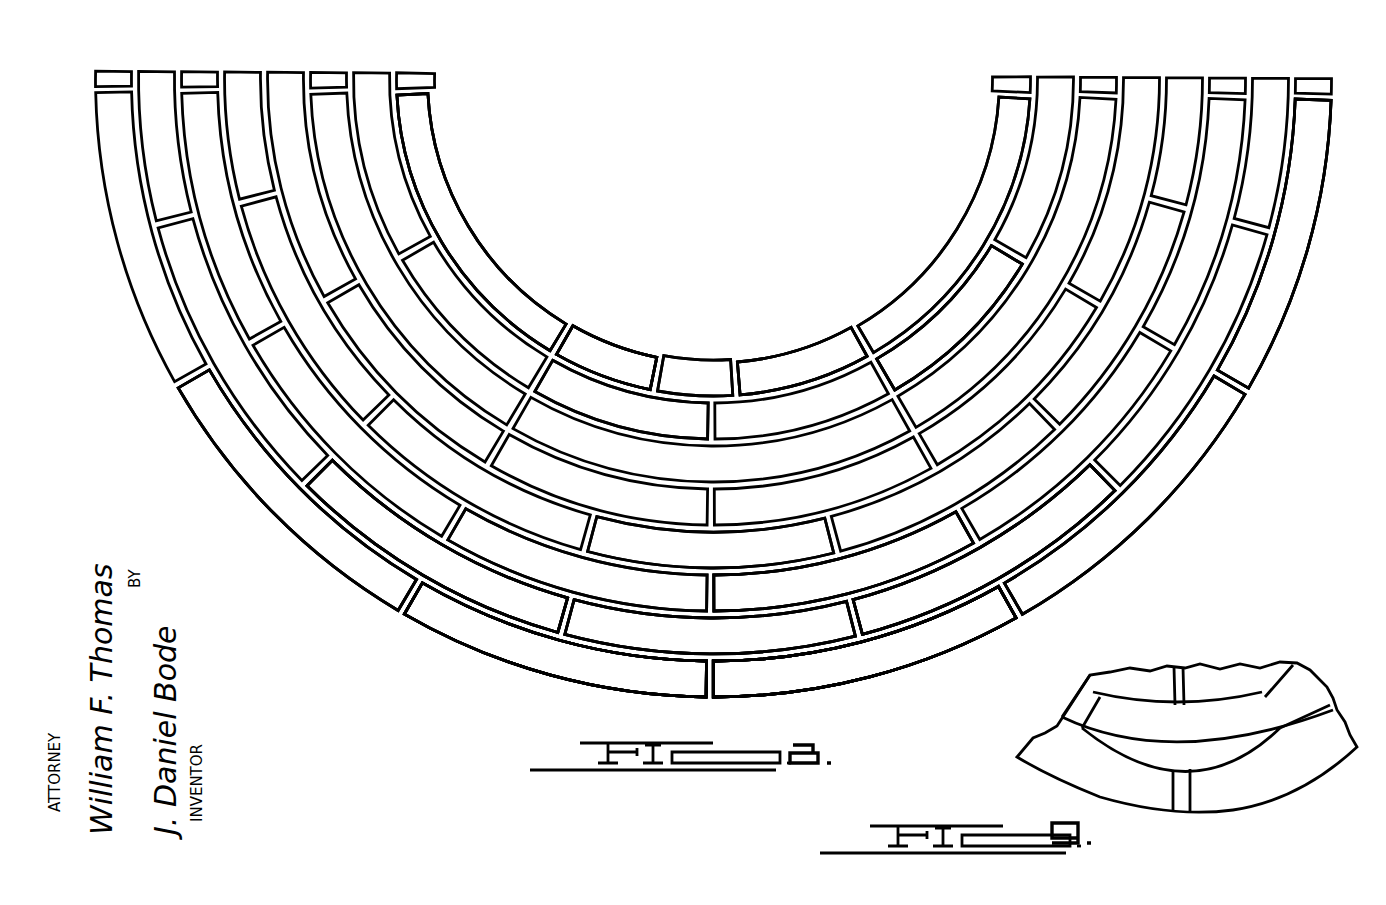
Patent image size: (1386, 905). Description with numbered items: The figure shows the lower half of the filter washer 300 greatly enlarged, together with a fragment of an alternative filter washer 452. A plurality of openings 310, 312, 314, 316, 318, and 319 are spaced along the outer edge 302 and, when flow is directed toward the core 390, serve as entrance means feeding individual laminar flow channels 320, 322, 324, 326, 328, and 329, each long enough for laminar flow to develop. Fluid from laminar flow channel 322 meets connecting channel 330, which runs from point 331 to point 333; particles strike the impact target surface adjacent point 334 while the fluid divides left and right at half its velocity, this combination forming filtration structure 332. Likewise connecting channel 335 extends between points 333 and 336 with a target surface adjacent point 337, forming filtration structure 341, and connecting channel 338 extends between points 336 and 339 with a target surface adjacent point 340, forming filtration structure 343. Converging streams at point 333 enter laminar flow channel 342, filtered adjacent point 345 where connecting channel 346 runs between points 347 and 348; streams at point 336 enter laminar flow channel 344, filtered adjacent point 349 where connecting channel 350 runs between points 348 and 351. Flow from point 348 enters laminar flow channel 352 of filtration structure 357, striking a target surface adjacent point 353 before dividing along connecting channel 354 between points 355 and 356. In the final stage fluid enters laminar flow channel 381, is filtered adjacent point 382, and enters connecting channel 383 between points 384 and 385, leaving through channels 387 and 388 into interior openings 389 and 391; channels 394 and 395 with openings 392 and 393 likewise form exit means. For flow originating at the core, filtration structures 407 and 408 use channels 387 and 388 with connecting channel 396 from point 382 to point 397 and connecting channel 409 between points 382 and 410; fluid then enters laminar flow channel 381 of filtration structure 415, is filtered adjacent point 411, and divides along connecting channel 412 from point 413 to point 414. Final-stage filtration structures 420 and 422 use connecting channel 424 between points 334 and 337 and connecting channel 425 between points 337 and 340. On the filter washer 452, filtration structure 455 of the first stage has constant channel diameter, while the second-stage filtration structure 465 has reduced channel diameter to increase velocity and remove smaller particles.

In FIG. 8, the washer 300 is at (226, 519).
In FIG. 8, the outer edge 302 is at (214, 448).
In FIG. 8, the opening 310 is at (196, 379).
In FIG. 8, the opening 312 is at (413, 621).
In FIG. 8, the opening 314 is at (710, 694).
In FIG. 8, the opening 316 is at (1022, 614).
In FIG. 8, the opening 318 is at (1242, 399).
In FIG. 8, the opening 319 is at (1337, 88).
In FIG. 8, the laminar flow channel 320 is at (196, 394).
In FIG. 8, the laminar flow channel 322 is at (460, 646).
In FIG. 8, the laminar flow channel 324 is at (716, 691).
In FIG. 8, the laminar flow channel 326 is at (1027, 602).
In FIG. 8, the laminar flow channel 328 is at (1233, 383).
In FIG. 8, the laminar flow channel 329 is at (1302, 88).
In FIG. 8, the connecting channel 330 is at (524, 666).
In FIG. 8, the point 331 is at (300, 494).
In FIG. 8, the filtration structure 332 is at (402, 593).
In FIG. 8, the point 333 is at (555, 649).
In FIG. 8, the point 334 is at (433, 563).
In FIG. 8, the connecting channel 335 is at (790, 659).
In FIG. 8, the point 336 is at (897, 662).
In FIG. 8, the point 337 is at (720, 660).
In FIG. 8, the connecting channel 338 is at (1098, 522).
In FIG. 8, the point 339 is at (1112, 498).
In FIG. 8, the point 340 is at (986, 548).
In FIG. 8, the filtration structure 341 is at (702, 685).
In FIG. 8, the laminar flow channel 342 is at (569, 622).
In FIG. 8, the filtration structure 343 is at (983, 650).
In FIG. 8, the laminar flow channel 344 is at (869, 599).
In FIG. 8, the point 345 is at (577, 560).
In FIG. 8, the connecting channel 346 is at (646, 618).
In FIG. 8, the point 347 is at (440, 548).
In FIG. 8, the point 348 is at (707, 624).
In FIG. 8, the point 349 is at (844, 561).
In FIG. 8, the connecting channel 350 is at (984, 550).
In FIG. 8, the point 351 is at (975, 525).
In FIG. 8, the laminar flow channel 352 is at (712, 593).
In FIG. 8, the point 353 is at (723, 551).
In FIG. 8, the connecting channel 354 is at (844, 561).
In FIG. 8, the point 355 is at (604, 549).
In FIG. 8, the point 356 is at (942, 478).
In FIG. 8, the filtration structure 357 is at (695, 589).
In FIG. 8, the laminar flow channel 381 is at (725, 414).
In FIG. 8, the point 382 is at (729, 367).
In FIG. 8, the connecting channel 383 is at (649, 389).
In FIG. 8, the point 384 is at (556, 373).
In FIG. 8, the point 385 is at (864, 373).
In FIG. 8, the channel 387 is at (631, 338).
In FIG. 8, the channel 388 is at (863, 336).
In FIG. 8, the interior opening 389 is at (641, 336).
In FIG. 8, the core 390 is at (740, 169).
In FIG. 8, the interior opening 391 is at (856, 331).
In FIG. 8, the opening 392 is at (434, 90).
In FIG. 8, the opening 393 is at (1027, 95).
In FIG. 8, the channel 394 is at (425, 98).
In FIG. 8, the channel 395 is at (1010, 100).
In FIG. 8, the connecting channel 396 is at (547, 351).
In FIG. 8, the point 397 is at (563, 288).
In FIG. 8, the filtration structure 407 is at (554, 330).
In FIG. 8, the filtration structure 408 is at (852, 368).
In FIG. 8, the connecting channel 409 is at (913, 346).
In FIG. 8, the point 410 is at (991, 270).
In FIG. 8, the point 411 is at (718, 461).
In FIG. 8, the connecting channel 412 is at (766, 449).
In FIG. 8, the point 413 is at (531, 398).
In FIG. 8, the point 414 is at (901, 387).
In FIG. 8, the filtration structure 415 is at (696, 410).
In FIG. 8, the filtration structure 420 is at (559, 609).
In FIG. 8, the filtration structure 422 is at (860, 652).
In FIG. 8, the connecting channel 424 is at (555, 640).
In FIG. 8, the connecting channel 425 is at (897, 634).
In FIG. 9, the connecting channel 425 is at (1287, 704).
In FIG. 9, the filter washer 452 is at (1040, 798).
In FIG. 9, the filtration structure 455 is at (1203, 790).
In FIG. 9, the filtration structure 465 is at (1110, 716).